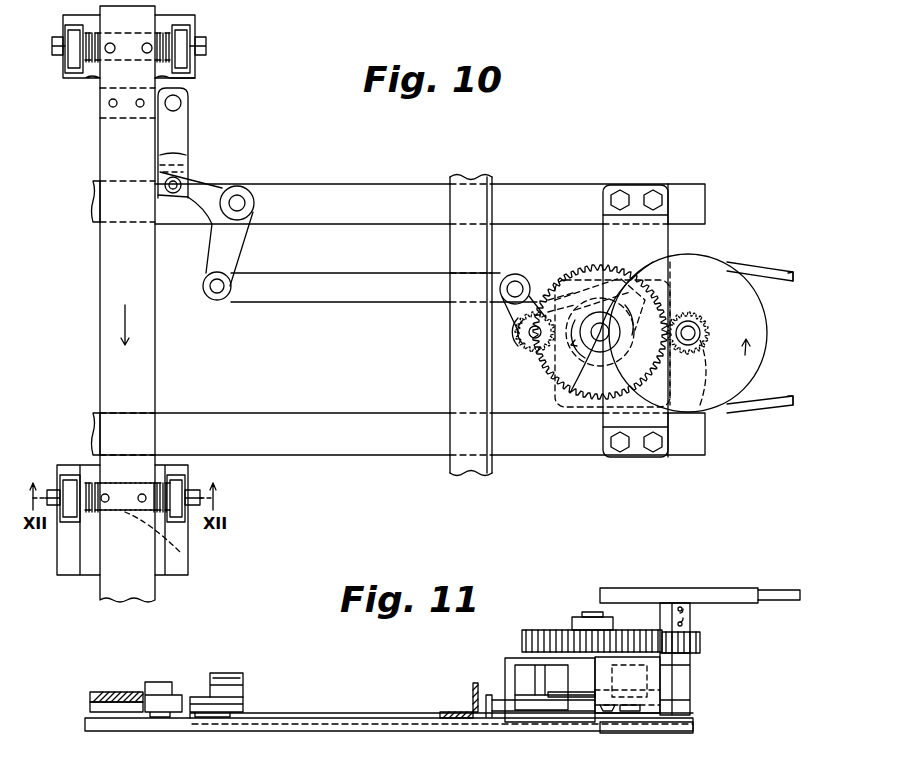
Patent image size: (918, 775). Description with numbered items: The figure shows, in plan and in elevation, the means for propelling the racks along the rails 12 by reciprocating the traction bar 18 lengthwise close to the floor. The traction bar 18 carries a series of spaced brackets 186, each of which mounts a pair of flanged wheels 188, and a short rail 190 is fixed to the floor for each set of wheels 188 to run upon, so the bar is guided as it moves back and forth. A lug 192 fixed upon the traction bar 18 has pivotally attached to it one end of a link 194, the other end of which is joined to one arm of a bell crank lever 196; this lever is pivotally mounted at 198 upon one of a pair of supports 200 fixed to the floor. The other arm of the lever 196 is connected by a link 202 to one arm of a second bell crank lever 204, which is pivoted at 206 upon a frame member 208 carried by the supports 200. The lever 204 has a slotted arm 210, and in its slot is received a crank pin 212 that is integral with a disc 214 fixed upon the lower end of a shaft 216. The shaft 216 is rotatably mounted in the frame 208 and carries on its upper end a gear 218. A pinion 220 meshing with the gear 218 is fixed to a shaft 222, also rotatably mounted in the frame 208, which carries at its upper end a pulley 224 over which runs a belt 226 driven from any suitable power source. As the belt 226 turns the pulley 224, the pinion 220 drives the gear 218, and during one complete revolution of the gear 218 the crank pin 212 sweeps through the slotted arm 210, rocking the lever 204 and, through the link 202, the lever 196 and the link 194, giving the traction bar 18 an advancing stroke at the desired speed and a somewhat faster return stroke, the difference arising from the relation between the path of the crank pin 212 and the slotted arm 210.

In FIG. 10, the rails 12 is at (492, 178).
In FIG. 11, the rails 12 is at (447, 710).
In FIG. 10, the traction bar 18 is at (103, 373).
In FIG. 11, the traction bar 18 is at (107, 690).
In FIG. 10, the brackets 186 is at (117, 62).
In FIG. 10, the flanged wheels 188 is at (188, 66).
In FIG. 10, the short rail 190 is at (160, 17).
In FIG. 10, the lug 192 is at (118, 128).
In FIG. 11, the lug 192 is at (90, 706).
In FIG. 10, the link 194 is at (185, 138).
In FIG. 11, the link 194 is at (158, 682).
In FIG. 10, the bell crank lever 196 is at (247, 185).
In FIG. 11, the bell crank lever 196 is at (194, 697).
In FIG. 10, the pivot 198 is at (253, 204).
In FIG. 11, the pivot 198 is at (238, 675).
In FIG. 10, the supports 200 is at (403, 186).
In FIG. 11, the supports 200 is at (126, 732).
In FIG. 10, the link 202 is at (360, 292).
In FIG. 11, the link 202 is at (328, 713).
In FIG. 10, the bell crank lever 204 is at (510, 308).
In FIG. 11, the bell crank lever 204 is at (487, 695).
In FIG. 10, the pivot 206 is at (522, 344).
In FIG. 10, the frame member 208 is at (668, 243).
In FIG. 11, the frame member 208 is at (626, 722).
In FIG. 10, the slotted arm 210 is at (590, 280).
In FIG. 11, the slotted arm 210 is at (545, 720).
In FIG. 10, the crank pin 212 is at (618, 280).
In FIG. 11, the crank pin 212 is at (581, 722).
In FIG. 10, the disc 214 is at (556, 295).
In FIG. 11, the disc 214 is at (558, 690).
In FIG. 10, the shaft 216 is at (572, 392).
In FIG. 11, the shaft 216 is at (590, 612).
In FIG. 10, the gear 218 is at (557, 384).
In FIG. 11, the gear 218 is at (532, 630).
In FIG. 10, the pinion 220 is at (697, 352).
In FIG. 11, the pinion 220 is at (700, 640).
In FIG. 10, the shaft 222 is at (700, 325).
In FIG. 11, the shaft 222 is at (690, 688).
In FIG. 10, the pulley 224 is at (723, 408).
In FIG. 11, the pulley 224 is at (718, 588).
In FIG. 10, the belt 226 is at (783, 405).
In FIG. 11, the belt 226 is at (781, 590).